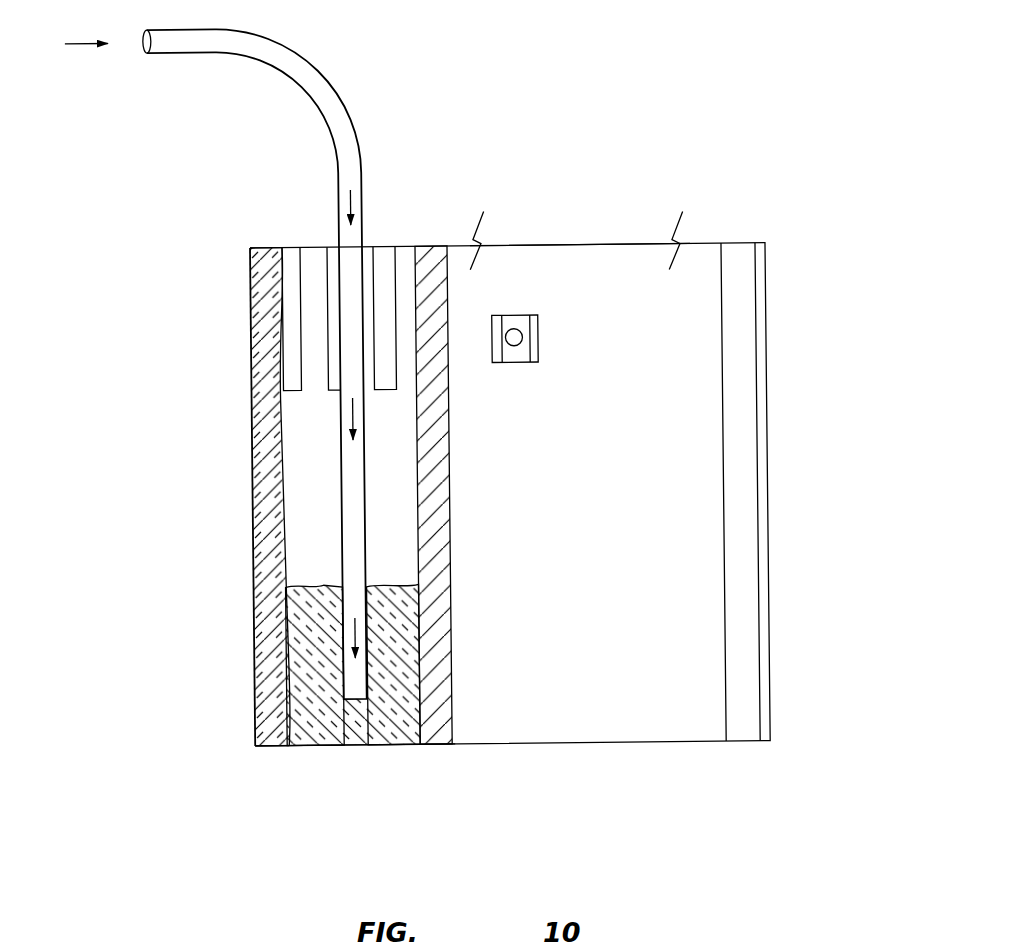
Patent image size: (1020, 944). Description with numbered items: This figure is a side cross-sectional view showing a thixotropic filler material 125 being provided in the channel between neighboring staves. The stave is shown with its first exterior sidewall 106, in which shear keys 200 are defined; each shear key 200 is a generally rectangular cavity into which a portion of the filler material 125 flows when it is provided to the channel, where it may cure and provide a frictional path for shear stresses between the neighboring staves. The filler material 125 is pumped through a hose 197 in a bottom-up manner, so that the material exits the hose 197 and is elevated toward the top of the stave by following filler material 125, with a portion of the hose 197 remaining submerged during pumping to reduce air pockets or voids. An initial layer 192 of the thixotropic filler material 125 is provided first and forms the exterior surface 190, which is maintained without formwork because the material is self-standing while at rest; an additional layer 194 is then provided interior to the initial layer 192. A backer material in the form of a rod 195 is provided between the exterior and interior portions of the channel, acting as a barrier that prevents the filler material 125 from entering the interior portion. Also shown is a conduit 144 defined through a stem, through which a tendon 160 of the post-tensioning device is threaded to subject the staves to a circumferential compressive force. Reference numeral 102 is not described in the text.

The housing 102 is at (700, 341).
The first exterior sidewall 106 is at (585, 266).
The filler material 125 is at (263, 750).
The conduit 144 is at (509, 360).
The tendon 160 is at (512, 333).
The exterior surface 190 is at (250, 440).
The initial layer 192 is at (266, 668).
The additional layer 194 is at (368, 715).
The rod 195 is at (427, 530).
The hose 197 is at (295, 78).
The shear key 200 is at (288, 258).